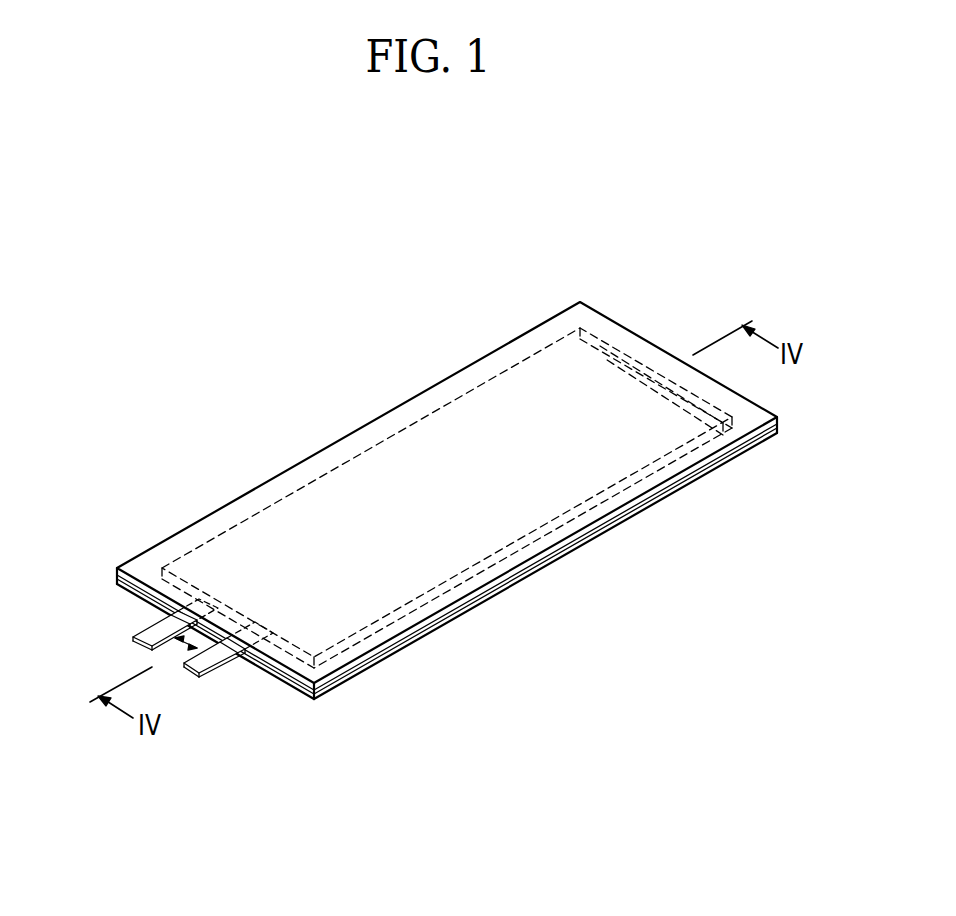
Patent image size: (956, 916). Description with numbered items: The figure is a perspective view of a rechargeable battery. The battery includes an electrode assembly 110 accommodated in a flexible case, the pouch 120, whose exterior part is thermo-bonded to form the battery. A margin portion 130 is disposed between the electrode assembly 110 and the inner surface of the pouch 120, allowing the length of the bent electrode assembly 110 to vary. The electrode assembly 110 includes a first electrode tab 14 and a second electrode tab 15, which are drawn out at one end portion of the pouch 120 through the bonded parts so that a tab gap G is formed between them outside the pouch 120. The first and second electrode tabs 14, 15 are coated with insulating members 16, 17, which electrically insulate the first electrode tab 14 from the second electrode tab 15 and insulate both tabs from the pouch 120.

The electrode assembly 110 is at (389, 437).
The pouch 120 is at (505, 345).
The margin portion 130 is at (603, 349).
The first electrode tab 14 is at (165, 681).
The second electrode tab 15 is at (150, 632).
The insulating member 16 is at (225, 647).
The insulating member 17 is at (173, 621).
The tab gap G is at (184, 645).